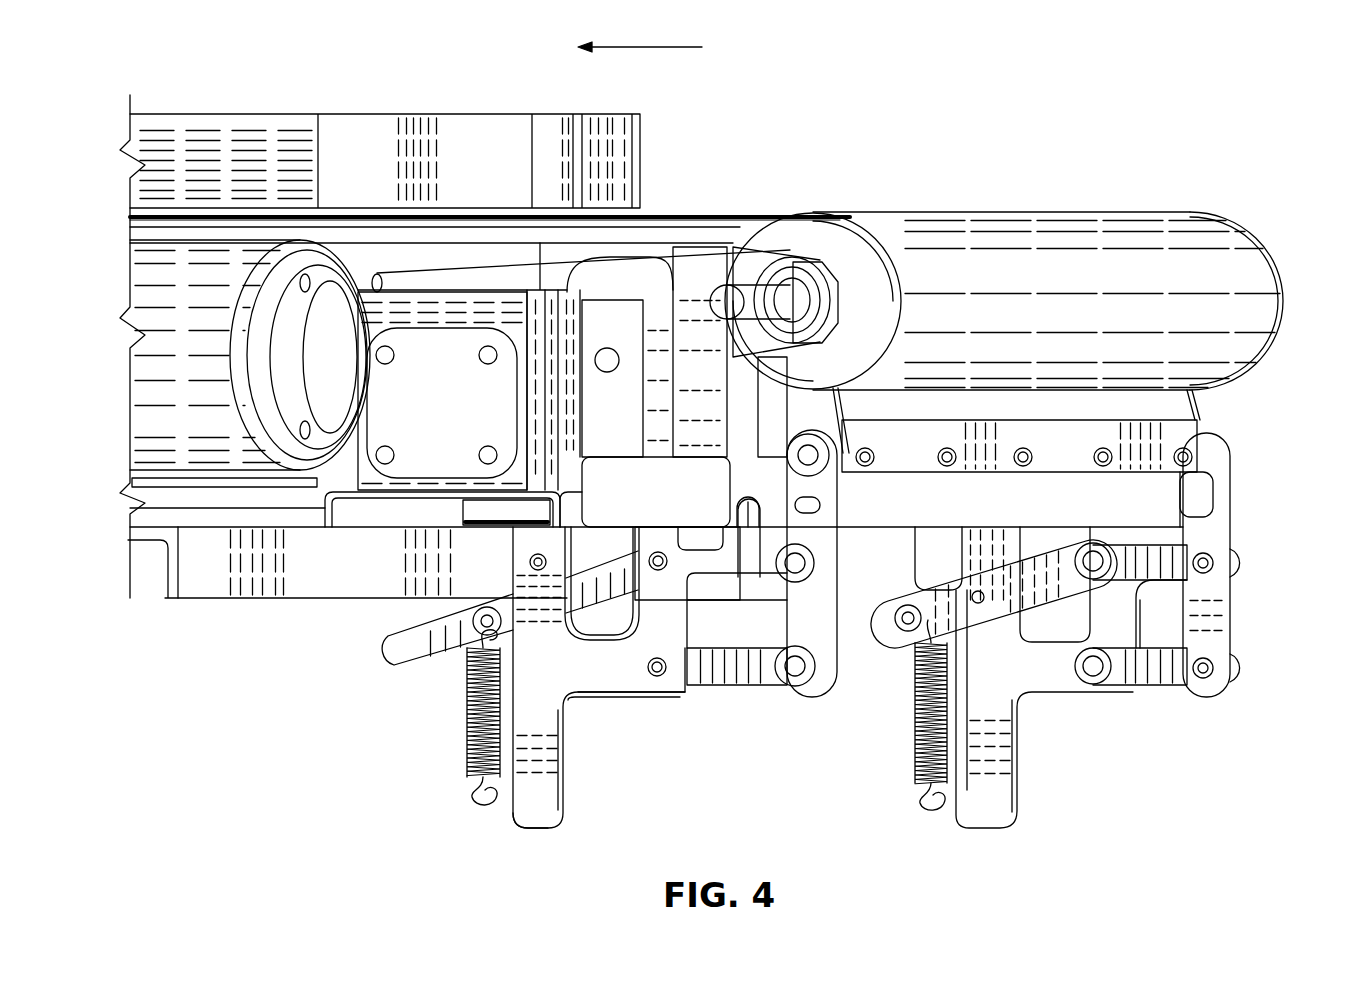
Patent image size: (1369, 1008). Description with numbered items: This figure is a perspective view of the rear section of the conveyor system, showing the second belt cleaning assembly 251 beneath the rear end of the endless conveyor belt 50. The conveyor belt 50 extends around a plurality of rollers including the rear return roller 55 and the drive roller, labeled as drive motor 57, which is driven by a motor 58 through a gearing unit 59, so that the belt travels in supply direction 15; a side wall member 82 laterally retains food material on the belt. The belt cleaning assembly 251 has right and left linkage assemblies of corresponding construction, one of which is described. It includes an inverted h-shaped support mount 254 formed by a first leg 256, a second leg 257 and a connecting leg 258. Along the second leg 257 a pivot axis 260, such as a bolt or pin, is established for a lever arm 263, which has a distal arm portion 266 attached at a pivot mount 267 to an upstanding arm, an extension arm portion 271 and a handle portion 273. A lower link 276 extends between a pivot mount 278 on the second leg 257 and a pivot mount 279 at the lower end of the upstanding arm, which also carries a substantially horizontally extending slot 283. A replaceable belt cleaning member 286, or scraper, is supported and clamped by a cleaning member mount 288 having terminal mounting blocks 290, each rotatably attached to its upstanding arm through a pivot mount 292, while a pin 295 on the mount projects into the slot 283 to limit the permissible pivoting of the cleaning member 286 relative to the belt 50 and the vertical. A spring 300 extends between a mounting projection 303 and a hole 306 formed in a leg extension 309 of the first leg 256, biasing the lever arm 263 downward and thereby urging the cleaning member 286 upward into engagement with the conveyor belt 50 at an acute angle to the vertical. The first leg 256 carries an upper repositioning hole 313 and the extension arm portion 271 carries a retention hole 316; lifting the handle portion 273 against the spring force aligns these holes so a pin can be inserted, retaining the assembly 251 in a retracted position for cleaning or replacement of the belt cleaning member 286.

The supply direction 15 is at (655, 46).
The side wall member 82 is at (172, 130).
The motor 58 is at (195, 258).
The gearing unit 59 is at (405, 308).
The conveyor belt 50 is at (712, 217).
The rear return roller 55 is at (818, 265).
The drive motor 57 is at (630, 265).
The belt cleaning member 286 is at (1187, 410).
The cleaning member mount 288 is at (1190, 440).
The terminal mounting block 290 is at (1212, 490).
The pivot mount 292 is at (815, 465).
The slot 283 is at (823, 505).
The pivot axis 260 is at (658, 547).
The pivot mount 267 is at (773, 545).
The extension arm portion 271 is at (603, 577).
The distal arm portion 266 is at (776, 565).
The second leg 257 is at (683, 600).
The lever arm 263 is at (485, 588).
The upper repositioning hole 313 is at (530, 563).
The mounting projection 303 is at (474, 614).
The handle portion 273 is at (403, 655).
The first leg 256 is at (530, 687).
The spring 300 is at (467, 747).
The hole 306 is at (477, 807).
The leg extension 309 is at (522, 812).
The support mount 254 is at (583, 718).
The connecting leg 258 is at (632, 690).
The pivot mount 278 is at (660, 677).
The lower link 276 is at (743, 667).
The pivot mount 279 is at (797, 686).
The pin 295 is at (978, 600).
The retention hole 316 is at (1033, 692).
The second belt cleaning assembly 251 is at (1262, 600).